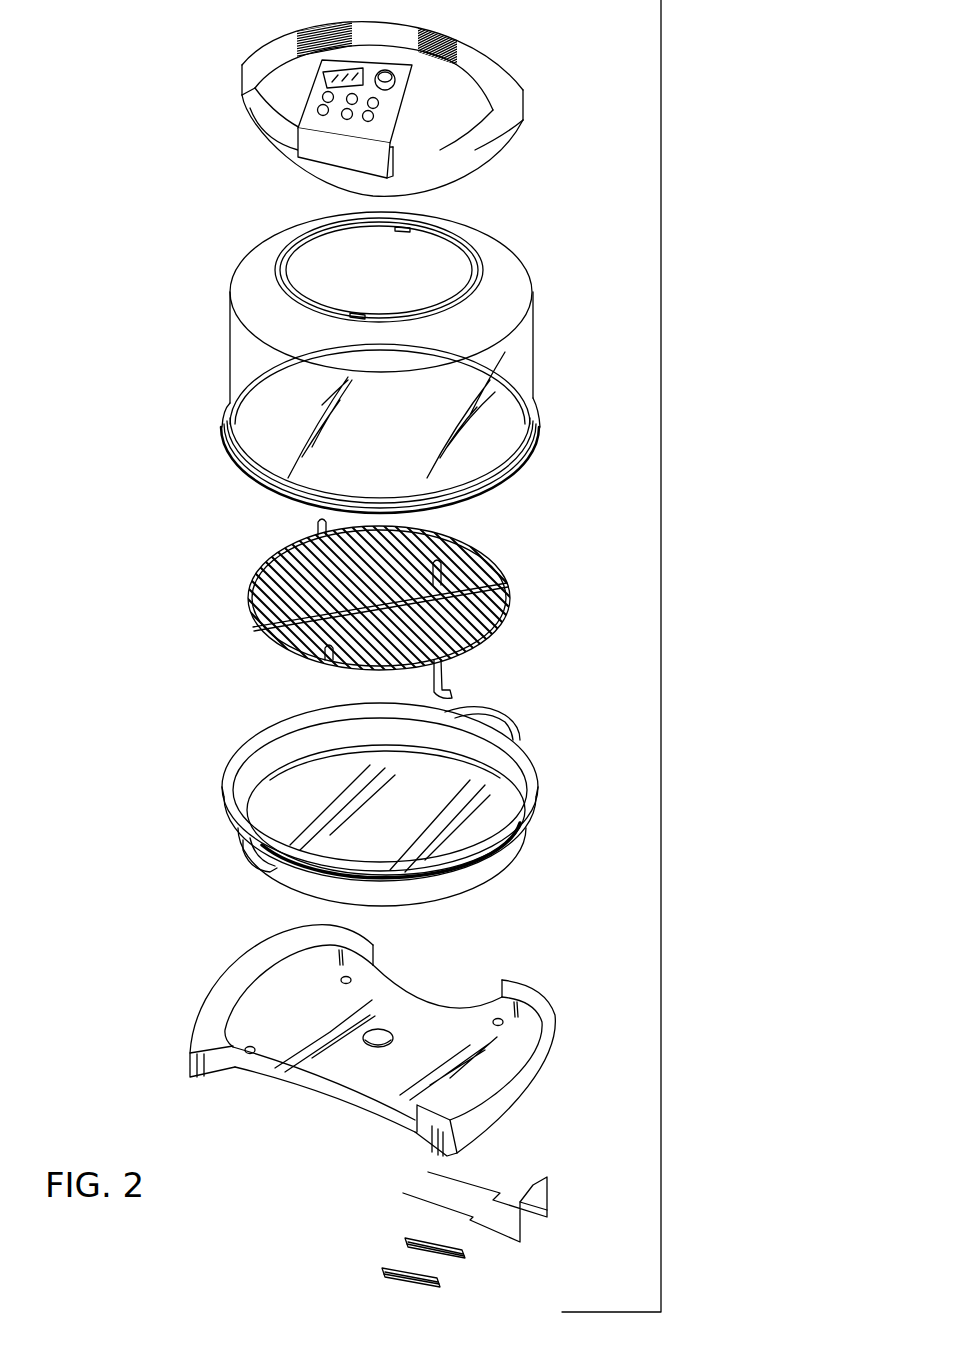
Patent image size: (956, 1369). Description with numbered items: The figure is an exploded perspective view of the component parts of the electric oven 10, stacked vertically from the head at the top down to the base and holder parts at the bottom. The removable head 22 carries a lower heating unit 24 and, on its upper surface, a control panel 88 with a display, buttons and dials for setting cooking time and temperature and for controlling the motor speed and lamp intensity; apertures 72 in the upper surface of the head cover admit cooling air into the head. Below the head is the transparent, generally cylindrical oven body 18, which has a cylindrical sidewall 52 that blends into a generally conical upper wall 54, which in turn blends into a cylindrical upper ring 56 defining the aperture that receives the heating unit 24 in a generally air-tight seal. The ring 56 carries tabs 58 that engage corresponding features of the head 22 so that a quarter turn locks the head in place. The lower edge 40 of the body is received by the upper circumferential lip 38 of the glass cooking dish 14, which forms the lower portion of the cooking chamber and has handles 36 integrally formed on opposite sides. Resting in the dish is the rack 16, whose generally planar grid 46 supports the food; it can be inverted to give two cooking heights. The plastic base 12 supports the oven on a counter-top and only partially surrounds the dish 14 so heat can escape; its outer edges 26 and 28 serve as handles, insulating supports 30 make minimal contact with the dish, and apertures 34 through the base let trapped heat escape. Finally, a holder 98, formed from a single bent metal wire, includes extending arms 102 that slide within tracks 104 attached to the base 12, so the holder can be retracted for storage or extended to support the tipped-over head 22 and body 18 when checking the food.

The oven 10 is at (705, 505).
The base 12 is at (135, 967).
The glass cooking dish 14 is at (405, 791).
The rack 16 is at (375, 603).
The oven body 18 is at (376, 363).
The head 22 is at (387, 108).
The heating unit 24 is at (447, 177).
The outer edge 26 is at (500, 1110).
The outer edge 28 is at (235, 968).
The supports 30 is at (250, 1054).
The apertures 34 is at (377, 1047).
The handles 36 is at (495, 713).
The upper circumferential lip 38 is at (538, 787).
The lower edge 40 is at (510, 477).
The grid 46 is at (470, 597).
The cylindrical sidewall 52 is at (228, 365).
The upper wall 54 is at (517, 268).
The ring 56 is at (288, 295).
The tabs 58 is at (412, 230).
The apertures 72 is at (320, 32).
The control panel 88 is at (310, 113).
The holder 98 is at (523, 1225).
The extending arms 102 is at (493, 1233).
The tracks 104 is at (387, 1267).